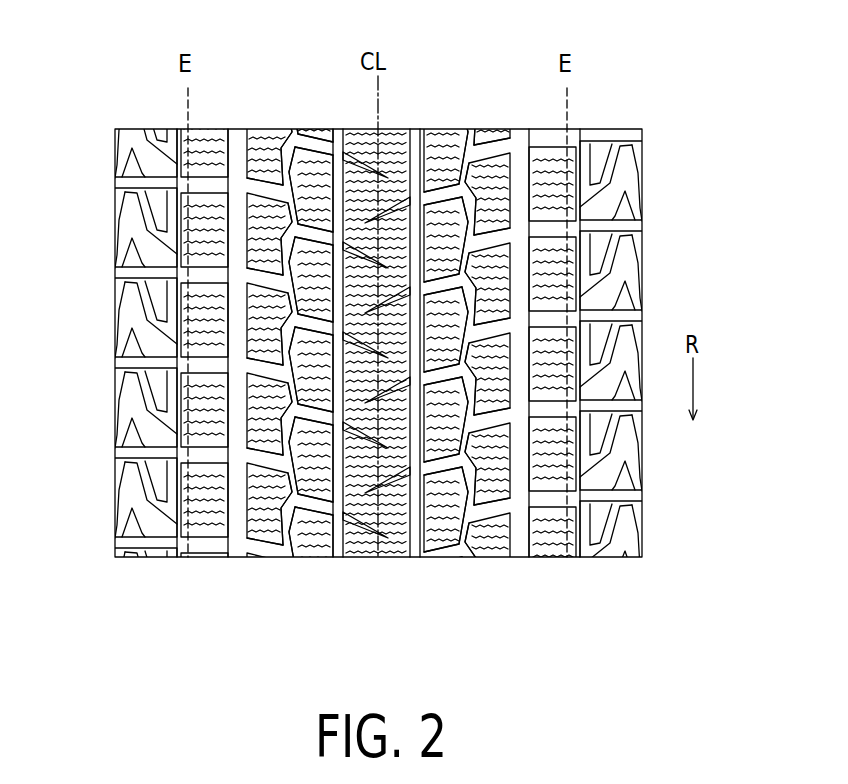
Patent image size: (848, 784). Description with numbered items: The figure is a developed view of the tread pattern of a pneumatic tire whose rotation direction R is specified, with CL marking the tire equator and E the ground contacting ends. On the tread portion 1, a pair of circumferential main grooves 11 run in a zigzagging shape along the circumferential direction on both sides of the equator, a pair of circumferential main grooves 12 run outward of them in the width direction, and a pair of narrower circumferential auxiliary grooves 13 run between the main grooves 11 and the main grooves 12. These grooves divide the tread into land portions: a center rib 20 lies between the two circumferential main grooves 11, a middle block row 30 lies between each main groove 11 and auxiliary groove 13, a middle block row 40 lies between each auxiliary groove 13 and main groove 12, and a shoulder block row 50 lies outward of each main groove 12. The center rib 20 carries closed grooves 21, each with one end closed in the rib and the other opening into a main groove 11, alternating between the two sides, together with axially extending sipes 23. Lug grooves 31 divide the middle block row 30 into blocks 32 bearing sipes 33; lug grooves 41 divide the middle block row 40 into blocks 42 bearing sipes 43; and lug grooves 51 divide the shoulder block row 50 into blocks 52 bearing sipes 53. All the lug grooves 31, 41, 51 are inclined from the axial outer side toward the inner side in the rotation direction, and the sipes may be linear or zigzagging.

The tread portion 1 is at (601, 127).
The circumferential main grooves 11 is at (344, 129).
The circumferential main grooves 12 is at (232, 129).
The circumferential auxiliary grooves 13 is at (285, 129).
The center rib 20 is at (373, 562).
The closed grooves 21 is at (360, 560).
The sipes 23 is at (393, 129).
The middle block row 30 is at (315, 562).
The lug grooves 31 is at (317, 560).
The blocks 32 is at (318, 129).
The sipes 33 is at (302, 129).
The middle block row 40 is at (272, 562).
The lug grooves 41 is at (258, 560).
The blocks 42 is at (278, 129).
The sipes 43 is at (258, 129).
The shoulder block row 50 is at (183, 562).
The lug grooves 51 is at (118, 276).
The blocks 52 is at (177, 129).
The sipes 53 is at (208, 129).